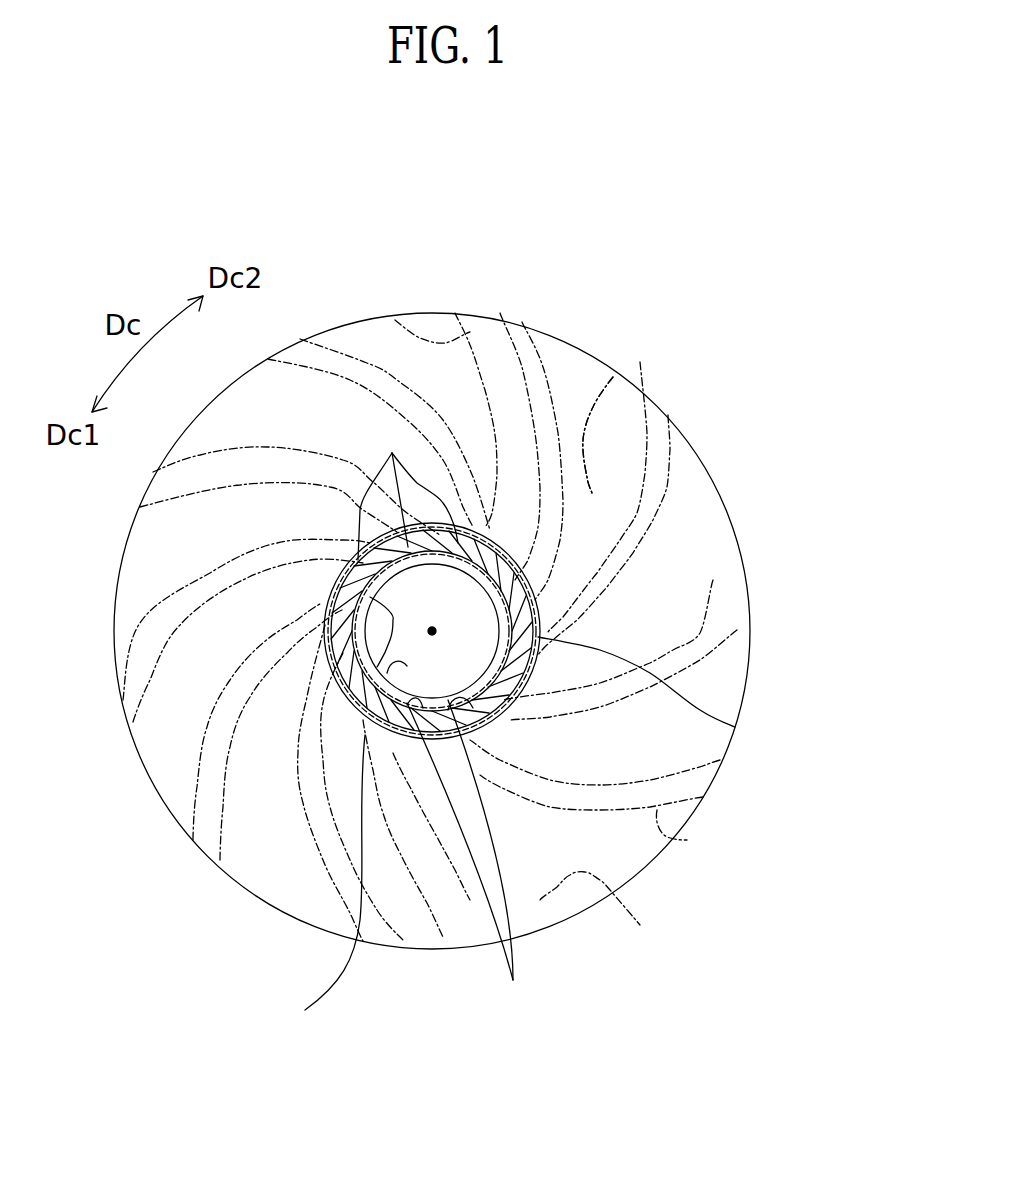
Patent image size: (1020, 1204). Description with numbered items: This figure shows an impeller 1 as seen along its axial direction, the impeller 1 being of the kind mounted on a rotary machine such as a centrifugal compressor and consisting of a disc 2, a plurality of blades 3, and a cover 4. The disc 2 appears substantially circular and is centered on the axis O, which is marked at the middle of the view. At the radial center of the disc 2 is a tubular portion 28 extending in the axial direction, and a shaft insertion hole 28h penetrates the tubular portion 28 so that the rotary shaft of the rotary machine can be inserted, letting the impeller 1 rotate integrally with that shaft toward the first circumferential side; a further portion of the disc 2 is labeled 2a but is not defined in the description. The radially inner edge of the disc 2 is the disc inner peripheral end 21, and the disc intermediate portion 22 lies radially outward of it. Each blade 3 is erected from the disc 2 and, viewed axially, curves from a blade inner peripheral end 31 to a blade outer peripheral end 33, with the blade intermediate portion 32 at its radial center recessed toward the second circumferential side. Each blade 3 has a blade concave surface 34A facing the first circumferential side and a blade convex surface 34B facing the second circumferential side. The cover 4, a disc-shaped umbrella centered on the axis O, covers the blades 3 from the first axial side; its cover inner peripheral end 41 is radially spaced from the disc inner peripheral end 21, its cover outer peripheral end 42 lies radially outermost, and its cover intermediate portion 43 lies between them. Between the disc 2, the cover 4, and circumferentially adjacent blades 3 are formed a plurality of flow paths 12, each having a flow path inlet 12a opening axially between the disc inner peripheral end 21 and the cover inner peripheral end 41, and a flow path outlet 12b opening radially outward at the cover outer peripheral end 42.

The impeller 1 is at (712, 359).
The disc 2 is at (500, 550).
The impeller shaft line 2a is at (324, 892).
The blade 3 is at (345, 375).
The cover 4 is at (713, 580).
The flow path 12 is at (557, 360).
The flow path inlet 12a is at (406, 489).
The flow path outlet 12b is at (657, 860).
The disc inner peripheral end 21 is at (335, 598).
The disc intermediate portion 22 is at (613, 377).
The tubular portion 28 is at (368, 660).
The shaft insertion hole 28h is at (380, 640).
The blade inner peripheral end 31 is at (468, 857).
The blade intermediate portion 32 is at (658, 660).
The blade outer peripheral end 33 is at (750, 590).
The blade concave surface 34A is at (603, 877).
The blade convex surface 34B is at (687, 840).
The cover inner peripheral end 41 is at (735, 727).
The cover outer peripheral end 42 is at (737, 630).
The cover intermediate portion 43 is at (613, 377).
The axis O is at (438, 633).